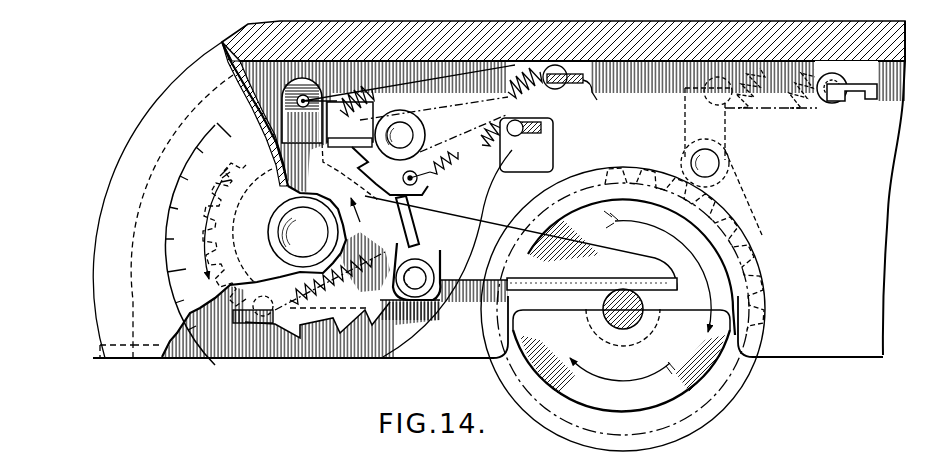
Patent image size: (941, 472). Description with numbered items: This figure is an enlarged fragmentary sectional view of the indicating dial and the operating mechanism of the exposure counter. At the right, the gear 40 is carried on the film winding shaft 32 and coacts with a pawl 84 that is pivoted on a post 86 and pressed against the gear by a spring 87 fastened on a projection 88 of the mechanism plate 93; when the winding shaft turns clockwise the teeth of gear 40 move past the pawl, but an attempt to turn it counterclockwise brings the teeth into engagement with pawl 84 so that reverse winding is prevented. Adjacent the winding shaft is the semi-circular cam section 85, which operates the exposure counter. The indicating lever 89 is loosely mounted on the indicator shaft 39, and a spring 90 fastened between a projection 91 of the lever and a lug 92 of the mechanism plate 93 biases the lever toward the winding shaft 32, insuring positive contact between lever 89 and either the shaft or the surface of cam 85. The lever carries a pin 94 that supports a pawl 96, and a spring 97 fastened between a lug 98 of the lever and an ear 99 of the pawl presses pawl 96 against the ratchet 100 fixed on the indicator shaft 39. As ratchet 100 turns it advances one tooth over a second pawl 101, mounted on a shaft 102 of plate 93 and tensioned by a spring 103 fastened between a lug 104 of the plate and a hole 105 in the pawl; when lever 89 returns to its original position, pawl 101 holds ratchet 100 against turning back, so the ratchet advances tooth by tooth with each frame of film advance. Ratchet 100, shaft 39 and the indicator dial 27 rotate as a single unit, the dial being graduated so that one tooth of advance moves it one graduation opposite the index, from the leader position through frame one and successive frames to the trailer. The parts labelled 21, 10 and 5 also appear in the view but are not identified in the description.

The housing frame 21 is at (225, 40).
The projection 91 is at (297, 101).
The dial scale graduation 10 is at (233, 141).
The spring 90 is at (362, 109).
The lug 92 is at (575, 88).
The shaft 102 is at (410, 126).
The pawl 101 is at (412, 141).
The spring 103 is at (485, 122).
The lug 104 is at (532, 118).
The hole 105 is at (421, 178).
The ratchet 100 is at (428, 210).
The indicating lever 89 is at (478, 223).
The pawl 96 is at (405, 238).
The ear 99 is at (420, 251).
The pin 94 is at (421, 289).
The mechanism plate 93 is at (453, 348).
The indicator shaft 39 is at (287, 236).
The indicator dial 27 is at (186, 269).
The dial index 5 is at (182, 281).
The spring 97 is at (330, 281).
The lug 98 is at (240, 323).
The film winding shaft 32 is at (613, 312).
The semi-circular cam section 85 is at (672, 392).
The pawl 84 is at (728, 133).
The post 86 is at (721, 159).
The gear 40 is at (623, 309).
The spring 87 is at (806, 103).
The projection 88 is at (878, 88).